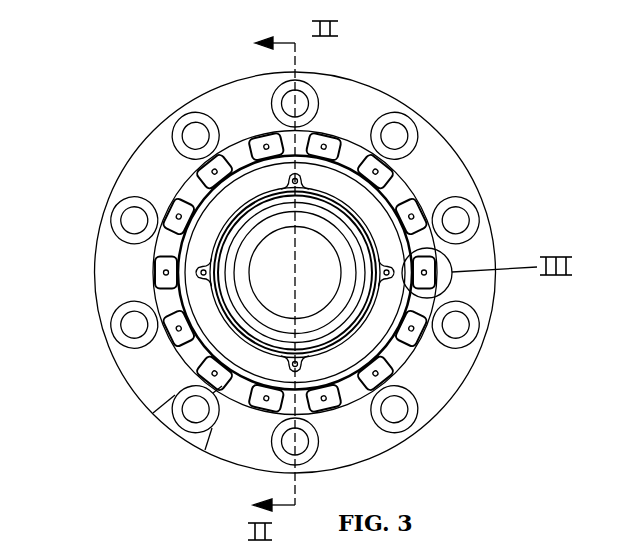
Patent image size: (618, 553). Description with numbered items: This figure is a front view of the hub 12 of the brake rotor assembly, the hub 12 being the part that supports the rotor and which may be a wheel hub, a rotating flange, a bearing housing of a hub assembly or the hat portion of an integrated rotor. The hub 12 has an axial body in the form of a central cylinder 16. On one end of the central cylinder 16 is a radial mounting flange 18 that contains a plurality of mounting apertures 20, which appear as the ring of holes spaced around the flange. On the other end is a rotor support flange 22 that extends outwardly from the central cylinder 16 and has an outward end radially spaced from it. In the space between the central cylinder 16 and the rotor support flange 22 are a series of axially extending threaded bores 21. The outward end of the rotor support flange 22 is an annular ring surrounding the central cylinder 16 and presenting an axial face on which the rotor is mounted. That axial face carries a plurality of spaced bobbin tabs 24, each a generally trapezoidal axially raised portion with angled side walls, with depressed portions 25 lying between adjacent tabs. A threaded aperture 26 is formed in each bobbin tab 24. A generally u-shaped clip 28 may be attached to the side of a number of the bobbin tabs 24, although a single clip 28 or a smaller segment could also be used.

The hub 12 is at (303, 280).
The central cylinder 16 is at (386, 246).
The radial mounting flange 18 is at (453, 175).
The mounting apertures 20 is at (458, 325).
The threaded bores 21 is at (204, 279).
The rotor support flange 22 is at (408, 350).
The bobbin tabs 24 is at (352, 392).
The depressed portions 25 is at (167, 245).
The threaded aperture 26 is at (198, 375).
The u-shaped clip 28 is at (340, 148).